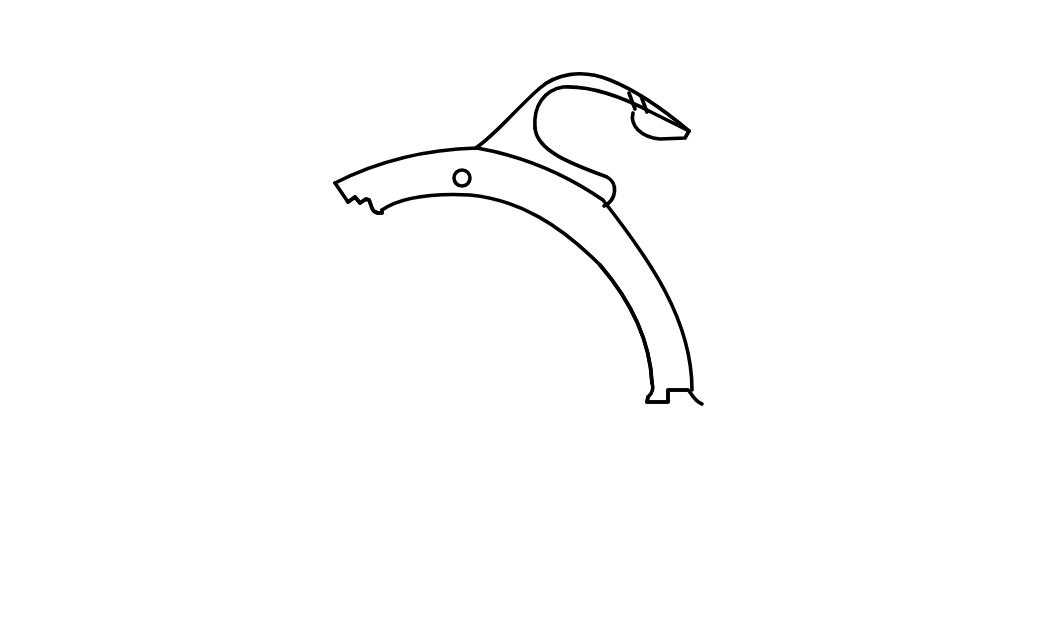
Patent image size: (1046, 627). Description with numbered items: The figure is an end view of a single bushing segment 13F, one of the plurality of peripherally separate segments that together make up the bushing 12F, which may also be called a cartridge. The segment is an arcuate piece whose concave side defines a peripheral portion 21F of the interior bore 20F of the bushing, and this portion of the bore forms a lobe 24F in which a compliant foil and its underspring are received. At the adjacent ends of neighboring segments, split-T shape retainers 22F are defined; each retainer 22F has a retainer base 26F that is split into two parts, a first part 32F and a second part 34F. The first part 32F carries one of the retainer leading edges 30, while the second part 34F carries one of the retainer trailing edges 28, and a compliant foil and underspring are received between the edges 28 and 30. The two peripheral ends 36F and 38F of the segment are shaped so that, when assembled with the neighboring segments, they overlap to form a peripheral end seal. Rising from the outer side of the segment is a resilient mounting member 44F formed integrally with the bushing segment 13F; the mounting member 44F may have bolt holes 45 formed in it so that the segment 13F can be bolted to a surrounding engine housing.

The bushing 12F is at (483, 312).
The bushing segment 13F is at (712, 221).
The interior bore 20F is at (464, 276).
The peripheral portion of bore 21F is at (464, 276).
The lobe 24F is at (549, 223).
The split-T shape retainer 22F is at (438, 342).
The retainer base 26F is at (438, 342).
The first part of retainer base 32F is at (362, 202).
The second part of retainer base 34F is at (647, 391).
The retainer trailing edge 28 is at (644, 383).
The retainer leading edge 30 is at (380, 213).
The peripheral end 36F is at (700, 404).
The peripheral end 38F is at (352, 198).
The resilient mounting member 44F is at (612, 80).
The bolt hole 45 is at (683, 138).